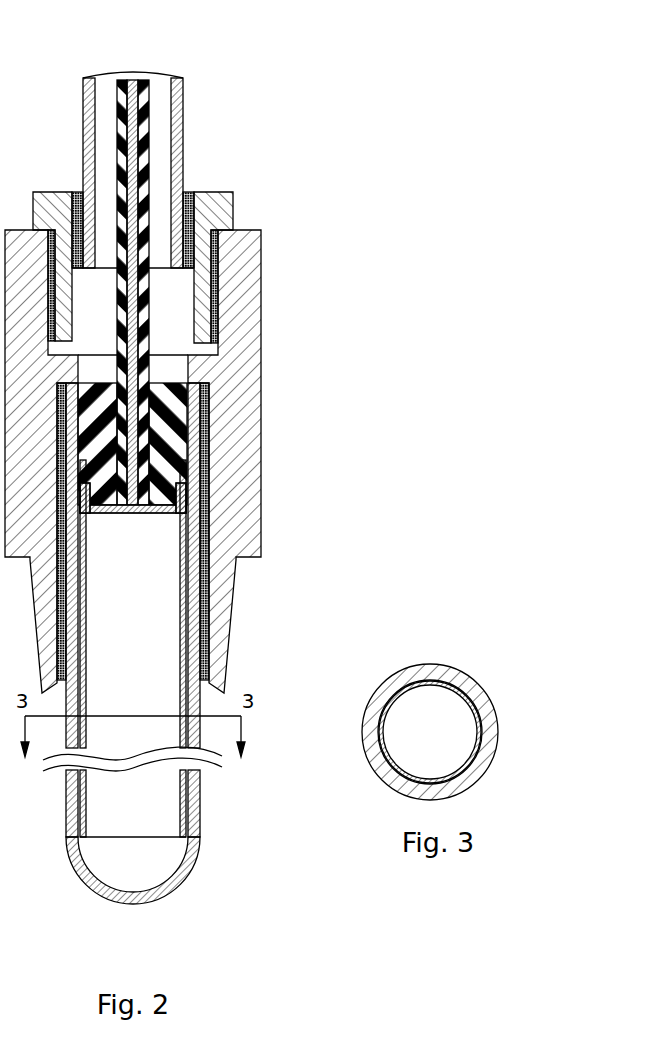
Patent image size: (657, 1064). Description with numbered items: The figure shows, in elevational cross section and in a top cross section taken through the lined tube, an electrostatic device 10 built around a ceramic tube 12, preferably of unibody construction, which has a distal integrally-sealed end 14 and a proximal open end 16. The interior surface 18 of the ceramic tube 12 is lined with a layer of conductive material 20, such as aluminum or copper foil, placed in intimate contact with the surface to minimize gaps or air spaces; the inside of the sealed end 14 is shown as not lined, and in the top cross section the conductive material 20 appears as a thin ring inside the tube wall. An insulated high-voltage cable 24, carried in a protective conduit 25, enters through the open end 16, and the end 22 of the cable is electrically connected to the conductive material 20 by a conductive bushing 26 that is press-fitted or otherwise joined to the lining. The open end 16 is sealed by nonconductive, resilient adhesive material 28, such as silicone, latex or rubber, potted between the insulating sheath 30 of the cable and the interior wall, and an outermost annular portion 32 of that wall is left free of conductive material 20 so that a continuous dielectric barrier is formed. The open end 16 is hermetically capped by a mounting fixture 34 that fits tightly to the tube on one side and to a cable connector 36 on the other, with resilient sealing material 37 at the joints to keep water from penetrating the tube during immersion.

In FIG. 2, the electrostatic device 10 is at (285, 191).
In FIG. 2, the ceramic tube 12 is at (193, 830).
In FIG. 3, the ceramic tube 12 is at (465, 685).
In FIG. 2, the distal integrally-sealed end 14 is at (118, 903).
In FIG. 2, the proximal open end 16 is at (176, 383).
In FIG. 2, the interior surface 18 is at (157, 862).
In FIG. 2, the layer of conductive material 20 is at (83, 655).
In FIG. 3, the layer of conductive material 20 is at (466, 684).
In FIG. 2, the end of the cable 22 is at (152, 508).
In FIG. 2, the high-voltage cable 24 is at (140, 82).
In FIG. 2, the protective conduit 25 is at (183, 143).
In FIG. 2, the conductive bushing 26 is at (118, 508).
In FIG. 2, the nonconductive adhesive material 28 is at (180, 472).
In FIG. 2, the insulating sheath 30 is at (176, 80).
In FIG. 2, the outermost annular portion 32 is at (188, 418).
In FIG. 2, the mounting fixture 34 is at (247, 285).
In FIG. 2, the cable connector 36 is at (213, 200).
In FIG. 2, the sealing material 37 is at (74, 192).